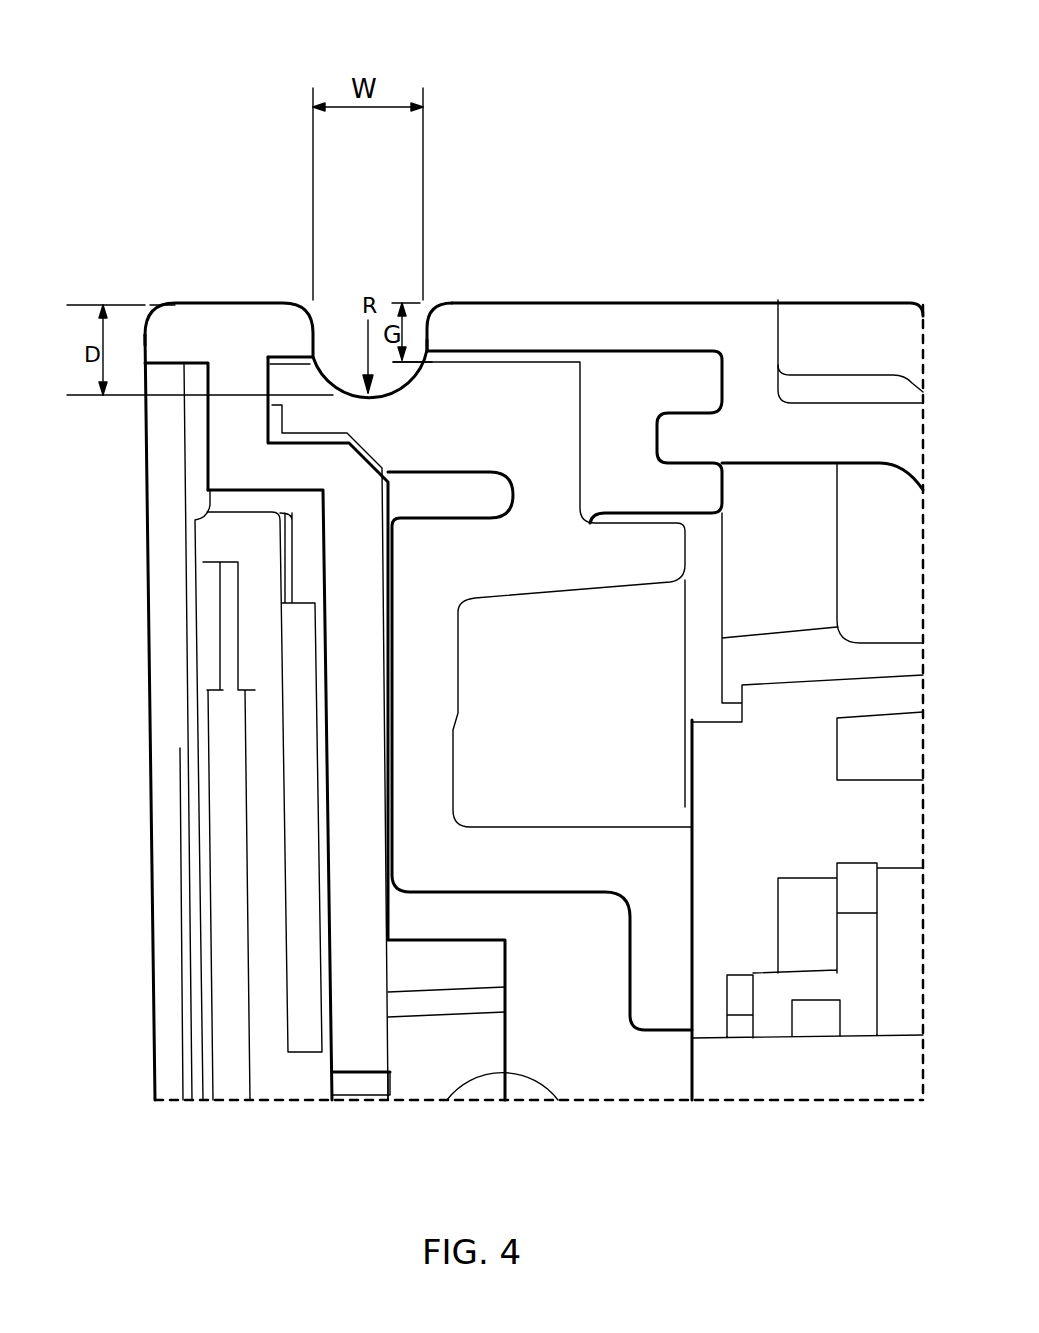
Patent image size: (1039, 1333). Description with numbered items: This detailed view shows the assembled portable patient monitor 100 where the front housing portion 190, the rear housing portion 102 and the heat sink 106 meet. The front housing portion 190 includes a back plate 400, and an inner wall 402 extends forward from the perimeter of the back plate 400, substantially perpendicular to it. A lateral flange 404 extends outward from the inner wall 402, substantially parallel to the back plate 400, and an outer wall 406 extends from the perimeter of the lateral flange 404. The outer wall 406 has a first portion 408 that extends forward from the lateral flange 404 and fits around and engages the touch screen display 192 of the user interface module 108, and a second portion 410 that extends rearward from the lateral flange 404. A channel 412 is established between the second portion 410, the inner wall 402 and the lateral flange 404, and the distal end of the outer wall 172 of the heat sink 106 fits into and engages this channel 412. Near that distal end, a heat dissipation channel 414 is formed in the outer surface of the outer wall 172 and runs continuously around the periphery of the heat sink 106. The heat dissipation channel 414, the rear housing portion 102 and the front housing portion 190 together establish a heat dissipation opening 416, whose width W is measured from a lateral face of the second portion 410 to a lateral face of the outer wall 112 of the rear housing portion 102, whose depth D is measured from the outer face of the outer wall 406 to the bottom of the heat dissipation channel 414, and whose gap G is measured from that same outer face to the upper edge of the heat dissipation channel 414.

The portable patient monitor 100 is at (116, 83).
The rear housing portion 102 is at (812, 310).
The heat sink 106 is at (527, 360).
The user interface module 108 is at (158, 308).
The outer wall of the rear housing portion 112 is at (620, 325).
The outer wall of the heat sink 172 is at (432, 397).
The front housing portion 190 is at (342, 1072).
The touch screen display 192 is at (168, 593).
The back plate 400 is at (353, 660).
The inner wall 402 is at (280, 468).
The lateral flange 404 is at (228, 422).
The outer wall of the front housing portion 406 is at (217, 337).
The first portion of the outer wall 408 is at (162, 342).
The second portion of the outer wall 410 is at (283, 360).
The channel 412 is at (283, 323).
The heat dissipation channel 414 is at (357, 390).
The heat dissipation opening 416 is at (342, 327).